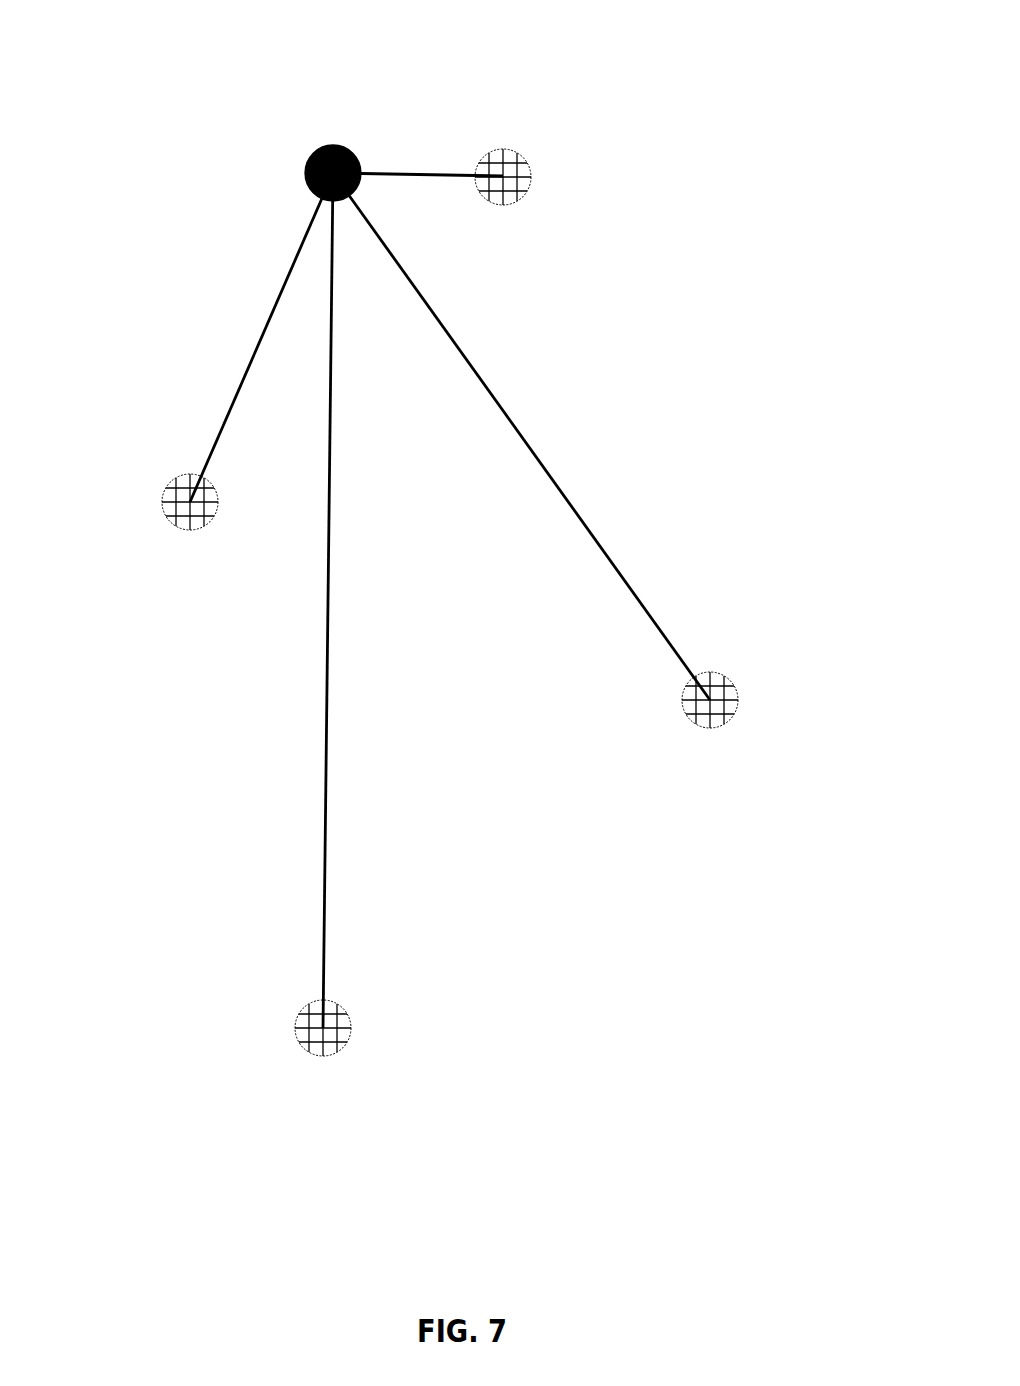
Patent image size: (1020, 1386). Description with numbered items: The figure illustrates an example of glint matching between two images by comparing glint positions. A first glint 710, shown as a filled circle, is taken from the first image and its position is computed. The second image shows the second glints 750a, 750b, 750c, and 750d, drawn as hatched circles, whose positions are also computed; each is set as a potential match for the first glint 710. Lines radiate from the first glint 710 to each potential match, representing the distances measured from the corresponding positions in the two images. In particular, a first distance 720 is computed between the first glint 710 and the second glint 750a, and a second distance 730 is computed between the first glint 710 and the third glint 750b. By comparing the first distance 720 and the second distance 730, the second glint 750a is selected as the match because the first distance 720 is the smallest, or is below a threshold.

The first glint 710 is at (355, 155).
The first distance 720 is at (427, 173).
The second distance 730 is at (255, 352).
The second glint 750a is at (532, 172).
The third glint 750b is at (163, 503).
The second glint 750c is at (740, 693).
The second glint 750d is at (322, 1057).